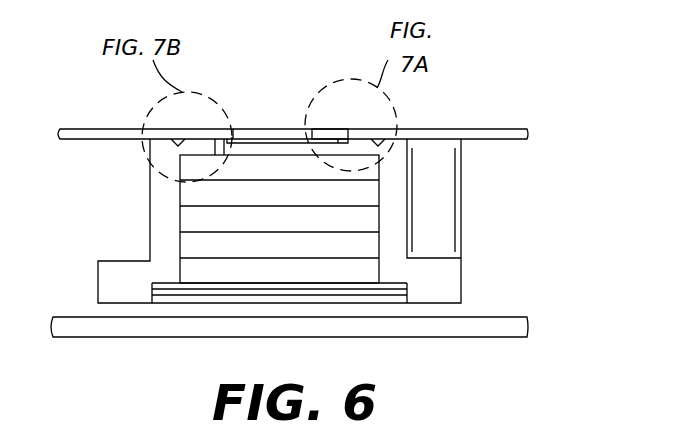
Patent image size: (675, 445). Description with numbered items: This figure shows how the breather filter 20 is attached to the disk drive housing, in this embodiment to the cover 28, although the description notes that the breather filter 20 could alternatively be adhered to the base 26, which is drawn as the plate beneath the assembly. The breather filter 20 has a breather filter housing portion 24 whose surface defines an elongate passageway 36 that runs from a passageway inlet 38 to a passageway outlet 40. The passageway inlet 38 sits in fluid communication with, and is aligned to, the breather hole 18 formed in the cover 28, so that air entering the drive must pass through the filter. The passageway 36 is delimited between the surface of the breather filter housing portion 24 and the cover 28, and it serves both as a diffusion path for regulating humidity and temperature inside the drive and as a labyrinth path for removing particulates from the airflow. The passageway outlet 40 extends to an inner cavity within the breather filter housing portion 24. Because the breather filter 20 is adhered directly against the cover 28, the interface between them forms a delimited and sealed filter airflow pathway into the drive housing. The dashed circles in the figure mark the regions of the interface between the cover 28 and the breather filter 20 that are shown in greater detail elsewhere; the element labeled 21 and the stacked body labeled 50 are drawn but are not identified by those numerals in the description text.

The breather filter 20 is at (498, 223).
The breather hole 18 is at (330, 138).
The notch 21 is at (175, 141).
The breather filter housing portion 24 is at (152, 185).
The base 26 is at (120, 337).
The cover 28 is at (75, 129).
The passageway 36 is at (268, 139).
The passageway inlet 38 is at (342, 141).
The passageway outlet 40 is at (216, 139).
The stacked die block 50 is at (213, 200).